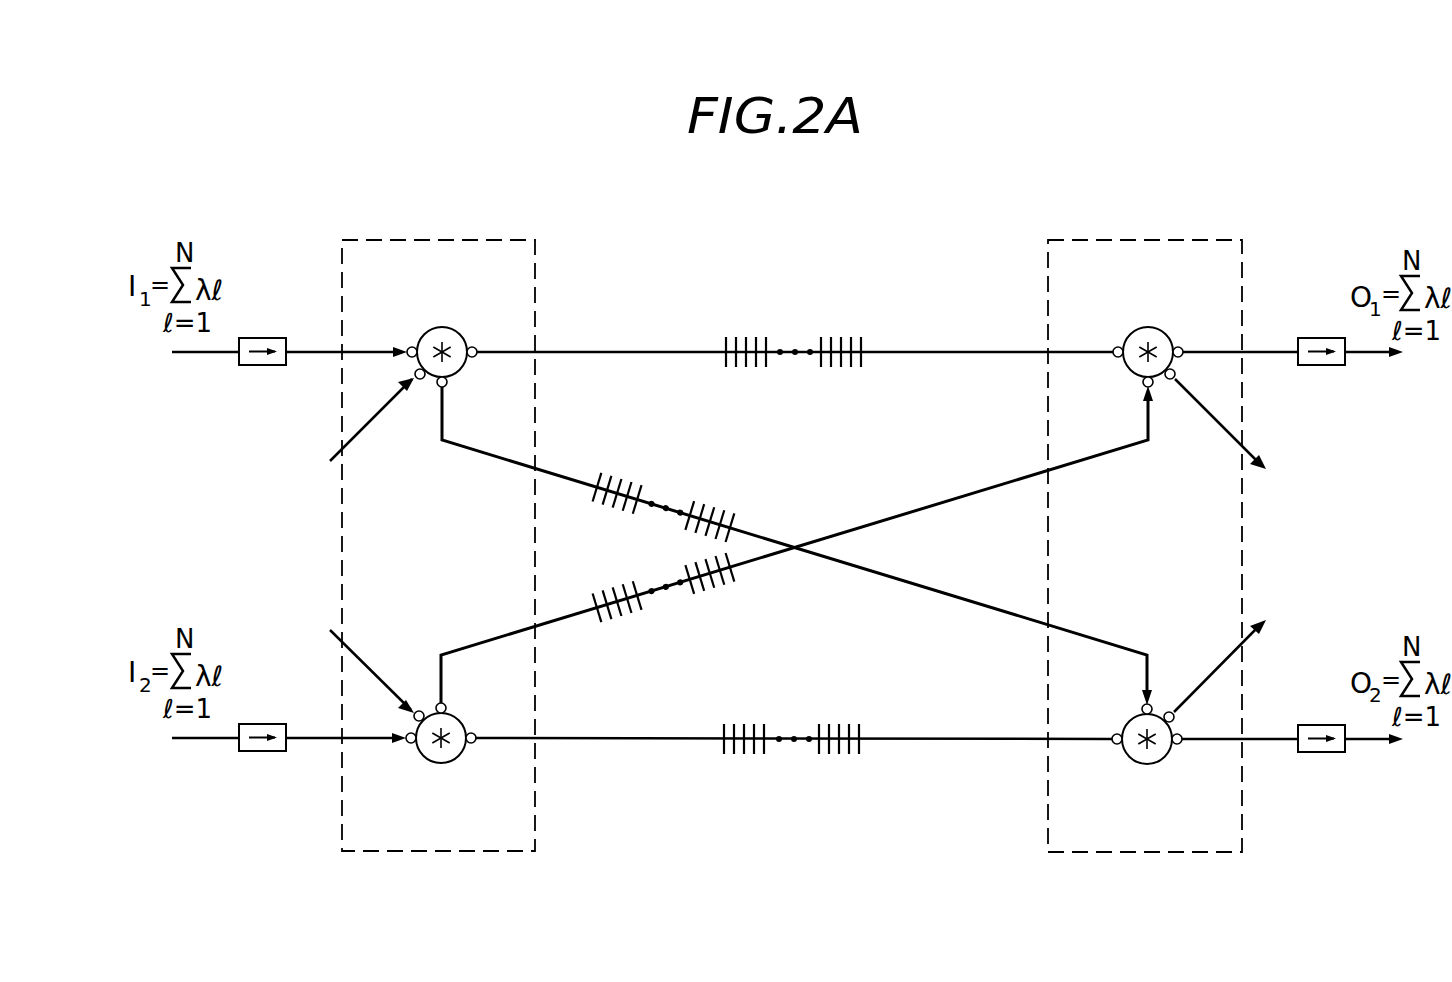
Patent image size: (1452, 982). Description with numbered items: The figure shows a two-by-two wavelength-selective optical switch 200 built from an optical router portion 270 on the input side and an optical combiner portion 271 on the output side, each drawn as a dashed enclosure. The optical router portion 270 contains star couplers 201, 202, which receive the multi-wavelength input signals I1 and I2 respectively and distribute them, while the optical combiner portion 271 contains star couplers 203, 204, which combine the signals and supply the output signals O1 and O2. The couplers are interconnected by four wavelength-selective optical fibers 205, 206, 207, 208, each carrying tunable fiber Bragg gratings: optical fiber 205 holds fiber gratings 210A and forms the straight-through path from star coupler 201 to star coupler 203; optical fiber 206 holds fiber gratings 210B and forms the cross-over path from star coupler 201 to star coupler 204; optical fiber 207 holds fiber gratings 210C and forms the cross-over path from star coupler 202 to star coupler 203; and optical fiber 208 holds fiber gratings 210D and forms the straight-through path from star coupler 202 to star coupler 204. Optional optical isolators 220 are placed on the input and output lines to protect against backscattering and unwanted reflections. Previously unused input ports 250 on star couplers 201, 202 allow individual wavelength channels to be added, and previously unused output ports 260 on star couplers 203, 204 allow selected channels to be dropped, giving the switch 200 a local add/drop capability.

The optical switch 200 is at (294, 560).
The star coupler 201 is at (443, 327).
The star coupler 202 is at (438, 764).
The star coupler 203 is at (1151, 327).
The star coupler 204 is at (1147, 765).
The wavelength-selective optical fiber 205 is at (676, 350).
The wavelength-selective optical fiber 206 is at (590, 478).
The wavelength-selective optical fiber 207 is at (578, 612).
The wavelength-selective optical fiber 208 is at (663, 742).
The fiber gratings 210A is at (766, 337).
The fiber gratings 210B is at (641, 492).
The fiber gratings 210C is at (642, 611).
The fiber gratings 210D is at (765, 757).
The optical isolator 220 is at (264, 366).
The input port 250 is at (371, 426).
The output port 260 is at (1216, 427).
The optical router portion 270 is at (376, 238).
The optical combiner portion 271 is at (1082, 238).